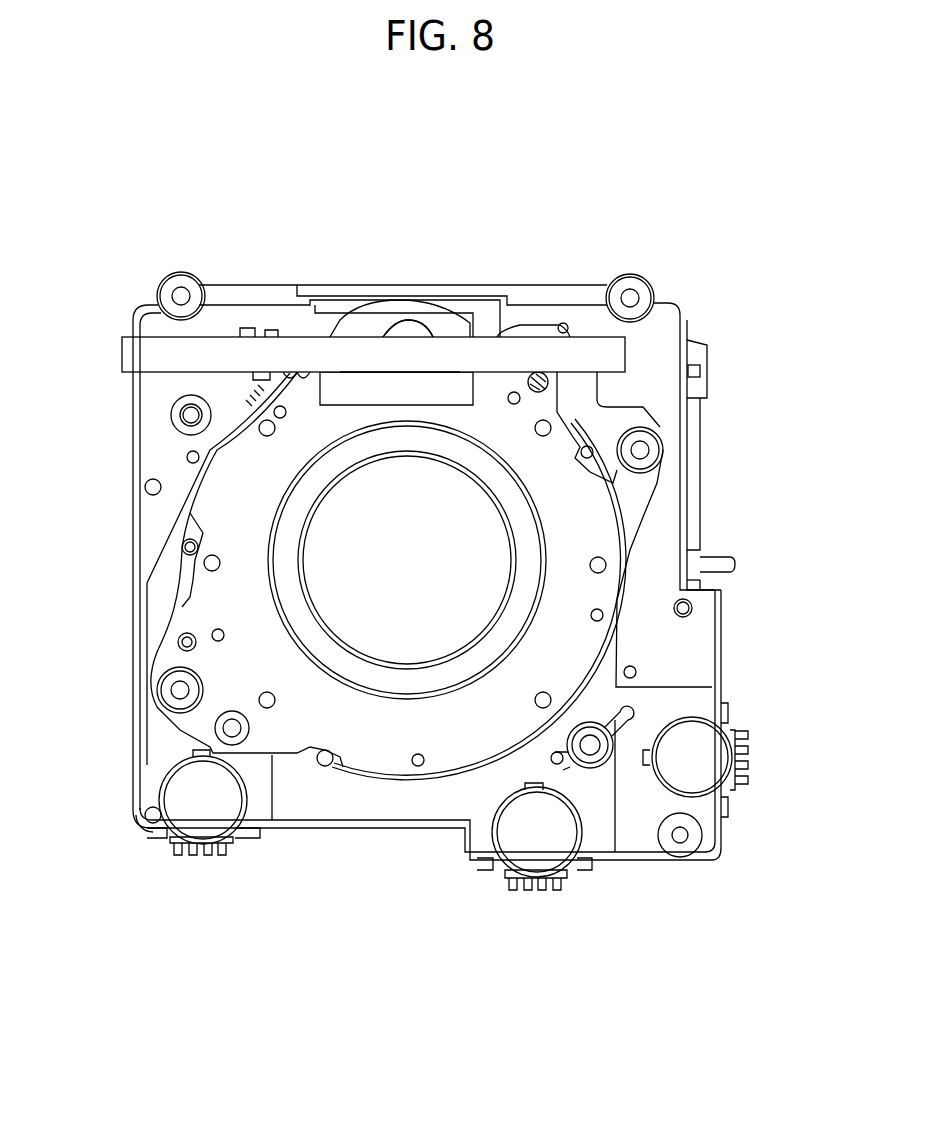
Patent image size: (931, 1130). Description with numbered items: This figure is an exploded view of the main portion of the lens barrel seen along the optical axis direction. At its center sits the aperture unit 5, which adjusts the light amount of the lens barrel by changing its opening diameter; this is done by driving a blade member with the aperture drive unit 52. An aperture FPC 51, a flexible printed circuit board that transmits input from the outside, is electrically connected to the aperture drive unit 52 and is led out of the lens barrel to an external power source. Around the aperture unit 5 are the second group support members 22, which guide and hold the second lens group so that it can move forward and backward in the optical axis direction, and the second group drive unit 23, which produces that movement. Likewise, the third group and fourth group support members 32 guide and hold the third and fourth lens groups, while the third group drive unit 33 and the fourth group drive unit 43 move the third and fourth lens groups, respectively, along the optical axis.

The aperture unit 5 is at (378, 743).
The second group support members 22 is at (641, 449).
The second group drive unit 23 is at (183, 808).
The third group and fourth group support members 32 is at (171, 414).
The third group drive unit 33 is at (692, 773).
The fourth group drive unit 43 is at (527, 848).
The aperture FPC 51 is at (152, 347).
The aperture drive unit 52 is at (402, 333).